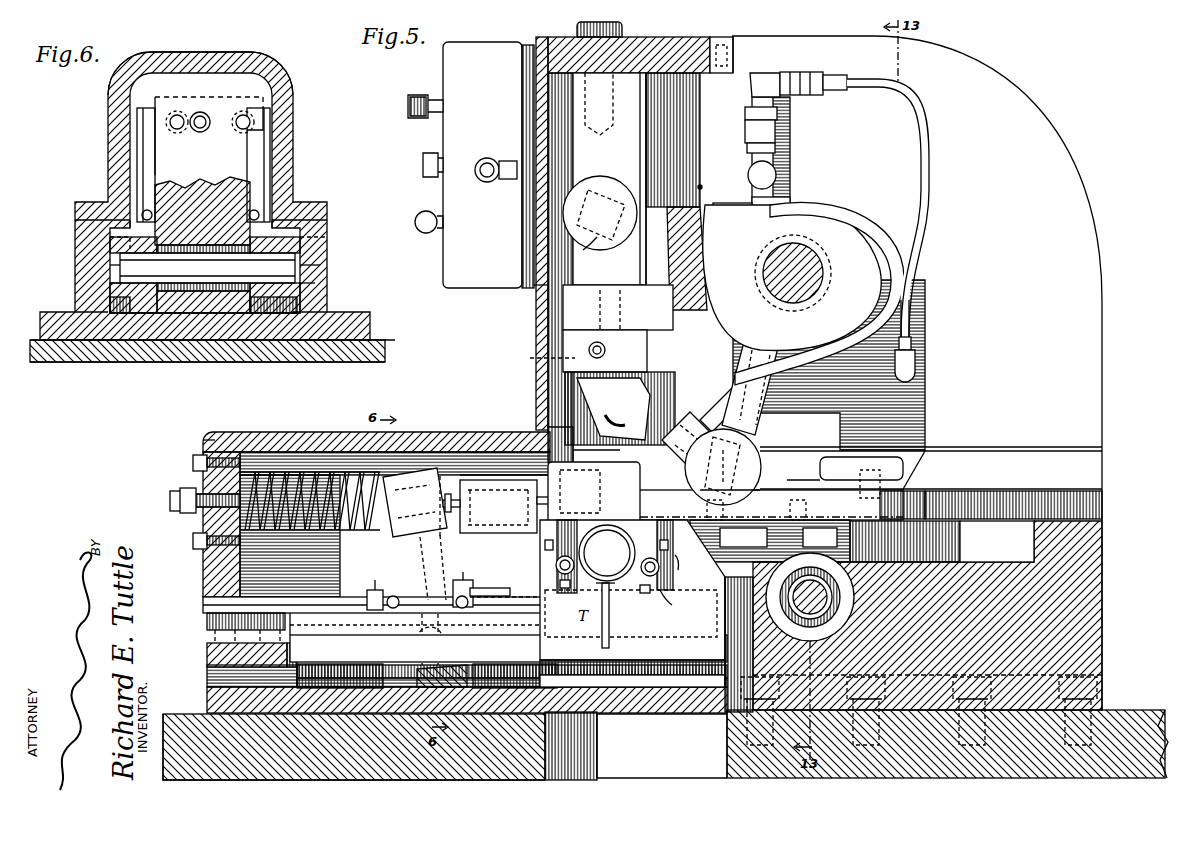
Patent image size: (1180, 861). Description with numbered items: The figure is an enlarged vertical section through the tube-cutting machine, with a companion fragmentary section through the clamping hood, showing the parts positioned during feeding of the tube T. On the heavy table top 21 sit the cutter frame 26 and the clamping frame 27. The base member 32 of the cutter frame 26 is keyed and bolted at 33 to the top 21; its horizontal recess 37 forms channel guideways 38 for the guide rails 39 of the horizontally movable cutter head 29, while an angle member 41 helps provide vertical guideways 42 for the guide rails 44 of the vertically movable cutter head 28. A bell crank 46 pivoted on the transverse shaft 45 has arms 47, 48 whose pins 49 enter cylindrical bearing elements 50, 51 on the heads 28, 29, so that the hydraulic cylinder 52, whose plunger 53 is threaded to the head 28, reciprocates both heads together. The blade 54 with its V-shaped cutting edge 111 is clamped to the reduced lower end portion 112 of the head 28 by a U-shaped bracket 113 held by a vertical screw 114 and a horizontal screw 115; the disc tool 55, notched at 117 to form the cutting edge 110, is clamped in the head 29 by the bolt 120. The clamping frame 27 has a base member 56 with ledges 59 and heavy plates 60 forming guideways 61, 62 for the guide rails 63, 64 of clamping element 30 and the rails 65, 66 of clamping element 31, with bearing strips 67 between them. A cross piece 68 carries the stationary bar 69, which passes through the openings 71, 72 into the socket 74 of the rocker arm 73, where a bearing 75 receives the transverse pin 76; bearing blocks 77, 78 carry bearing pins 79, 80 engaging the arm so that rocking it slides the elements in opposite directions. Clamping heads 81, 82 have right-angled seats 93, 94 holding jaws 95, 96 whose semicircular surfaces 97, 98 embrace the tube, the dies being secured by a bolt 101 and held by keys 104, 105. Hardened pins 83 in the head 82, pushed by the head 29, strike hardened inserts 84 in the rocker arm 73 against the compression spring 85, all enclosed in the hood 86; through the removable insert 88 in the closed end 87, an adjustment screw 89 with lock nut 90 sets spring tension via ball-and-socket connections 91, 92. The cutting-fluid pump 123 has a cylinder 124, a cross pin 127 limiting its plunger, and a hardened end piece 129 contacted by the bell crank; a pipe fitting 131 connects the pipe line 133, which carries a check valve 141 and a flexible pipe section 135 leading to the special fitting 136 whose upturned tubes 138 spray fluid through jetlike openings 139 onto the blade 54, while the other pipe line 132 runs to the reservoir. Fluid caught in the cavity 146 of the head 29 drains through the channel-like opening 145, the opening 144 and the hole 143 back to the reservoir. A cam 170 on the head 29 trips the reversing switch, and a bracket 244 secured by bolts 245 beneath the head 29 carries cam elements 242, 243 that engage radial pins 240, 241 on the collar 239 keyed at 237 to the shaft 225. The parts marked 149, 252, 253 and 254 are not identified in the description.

In FIG. 6, the table top 21 is at (372, 338).
In FIG. 5, the table top 21 is at (196, 722).
In FIG. 5, the cutter frame 26 is at (1100, 588).
In FIG. 6, the clamping frame 27 is at (76, 258).
In FIG. 5, the clamping frame 27 is at (198, 694).
In FIG. 5, the vertically movable tube cutter head 28 is at (547, 296).
In FIG. 5, the horizontally movable tube cutter head 29 is at (540, 435).
In FIG. 6, the tube-clamping element 30 is at (150, 318).
In FIG. 5, the tube-clamping element 30 is at (618, 672).
In FIG. 6, the tube-clamping element 31 is at (128, 215).
In FIG. 5, the tube-clamping element 31 is at (594, 675).
In FIG. 5, the base member 32 is at (1075, 632).
In FIG. 5, the bolt 33 is at (815, 700).
In FIG. 5, the horizontal recess 37 is at (985, 492).
In FIG. 5, the channel guideways 38 is at (1055, 492).
In FIG. 5, the guide rails 39 is at (673, 38).
In FIG. 5, the angle member 41 is at (556, 122).
In FIG. 5, the vertical guideways 42 is at (698, 335).
In FIG. 5, the guide rails 44 is at (684, 285).
In FIG. 5, the transverse shaft 45 is at (812, 262).
In FIG. 5, the bell crank 46 is at (812, 222).
In FIG. 5, the arm 47 is at (700, 205).
In FIG. 5, the arm 48 is at (905, 382).
In FIG. 5, the pins 49 is at (612, 178).
In FIG. 5, the cylindrical bearing element 50 is at (586, 250).
In FIG. 5, the cylindrical bearing element 51 is at (748, 378).
In FIG. 5, the hydraulic cylinder 52 is at (548, 38).
In FIG. 5, the plunger 53 is at (610, 22).
In FIG. 5, the cutting tool 54 is at (537, 380).
In FIG. 5, the cutting tool 55 is at (508, 434).
In FIG. 5, the base member 56 is at (205, 676).
In FIG. 6, the ledge 59 is at (112, 320).
In FIG. 5, the ledge 59 is at (300, 690).
In FIG. 6, the heavy plate 60 is at (80, 226).
In FIG. 5, the heavy plate 60 is at (340, 600).
In FIG. 6, the channel guideway 61 is at (108, 300).
In FIG. 6, the channel guideway 62 is at (305, 268).
In FIG. 6, the guide rail 63 is at (115, 281).
In FIG. 5, the guide rail 63 is at (688, 672).
In FIG. 6, the guide rail 64 is at (305, 282).
In FIG. 6, the guide rail 65 is at (110, 245).
In FIG. 5, the guide rail 65 is at (518, 594).
In FIG. 6, the guide rail 66 is at (305, 243).
In FIG. 6, the bearing strips 67 is at (115, 268).
In FIG. 5, the bearing strips 67 is at (500, 637).
In FIG. 5, the cross piece 68 is at (208, 656).
In FIG. 5, the bar 69 is at (208, 640).
In FIG. 6, the rectangular opening 71 is at (236, 290).
In FIG. 5, the rectangular opening 71 is at (478, 650).
In FIG. 6, the rectangular opening 72 is at (218, 300).
In FIG. 5, the rectangular opening 72 is at (492, 582).
In FIG. 6, the rocker arm 73 is at (240, 160).
In FIG. 5, the rocker arm 73 is at (400, 536).
In FIG. 6, the socket 74 is at (190, 295).
In FIG. 5, the socket 74 is at (392, 595).
In FIG. 6, the bearing 75 is at (205, 312).
In FIG. 5, the bearing 75 is at (458, 600).
In FIG. 6, the transverse pin 76 is at (172, 300).
In FIG. 5, the transverse pin 76 is at (438, 595).
In FIG. 6, the bearing block 77 is at (255, 313).
In FIG. 5, the bearing block 77 is at (375, 690).
In FIG. 6, the bearing block 78 is at (283, 182).
In FIG. 5, the bearing block 78 is at (464, 580).
In FIG. 5, the bearing pin 79 is at (432, 690).
In FIG. 5, the bearing pin 80 is at (458, 572).
In FIG. 5, the clamping head 81 is at (720, 491).
In FIG. 6, the clamping head 82 is at (140, 130).
In FIG. 5, the clamping head 82 is at (470, 478).
In FIG. 5, the hardened pins 83 is at (462, 478).
In FIG. 6, the hardened inserts 84 is at (177, 112).
In FIG. 5, the hardened inserts 84 is at (446, 492).
In FIG. 5, the compression spiral spring 85 is at (312, 470).
In FIG. 6, the hood 86 is at (280, 90).
In FIG. 5, the hood 86 is at (345, 434).
In FIG. 5, the closed end 87 is at (193, 542).
In FIG. 5, the removable insert 88 is at (193, 462).
In FIG. 5, the adjustment screw 89 is at (172, 495).
In FIG. 5, the lock nut 90 is at (186, 488).
In FIG. 6, the ball-and-socket connection 91 is at (202, 110).
In FIG. 5, the ball-and-socket connection 91 is at (376, 428).
In FIG. 5, the ball-and-socket connection 92 is at (256, 436).
In FIG. 5, the right-angled seat 93 is at (680, 570).
In FIG. 5, the right-angled seat 94 is at (640, 570).
In FIG. 5, the jaw 95 is at (664, 598).
In FIG. 5, the jaw 96 is at (560, 580).
In FIG. 5, the semicircular surface 97 is at (607, 553).
In FIG. 5, the semicircular surface 98 is at (556, 562).
In FIG. 5, the bolt 101 is at (650, 590).
In FIG. 5, the key 104 is at (646, 595).
In FIG. 5, the key 105 is at (668, 548).
In FIG. 5, the cutting edge 110 is at (546, 540).
In FIG. 5, the V-shaped cutting edge 111 is at (565, 405).
In FIG. 5, the reduced lower end portion 112 is at (530, 358).
In FIG. 5, the U-shaped bracket 113 is at (563, 345).
In FIG. 5, the vertical screw 114 is at (612, 312).
In FIG. 5, the horizontal screw 115 is at (596, 333).
In FIG. 5, the notch 117 is at (607, 553).
In FIG. 5, the bolt 120 is at (590, 512).
In FIG. 5, the pump 123 is at (776, 132).
In FIG. 5, the cylinder 124 is at (745, 70).
In FIG. 5, the cross pin 127 is at (680, 184).
In FIG. 5, the hardened end piece 129 is at (722, 214).
In FIG. 5, the pipe fitting 131 is at (752, 75).
In FIG. 5, the pipe line 132 is at (910, 278).
In FIG. 5, the pipe line 133 is at (776, 160).
In FIG. 5, the flexible pipe section 135 is at (924, 182).
In FIG. 5, the special fitting 136 is at (717, 407).
In FIG. 5, the tubes 138 is at (625, 414).
In FIG. 5, the jetlike openings 139 is at (606, 420).
In FIG. 5, the check valve 141 is at (778, 114).
In FIG. 5, the hole 143 is at (642, 768).
In FIG. 5, the opening 144 is at (650, 708).
In FIG. 5, the channel-like opening 145 is at (714, 682).
In FIG. 5, the cavity 146 is at (556, 428).
In FIG. 5, the pin 149 is at (723, 467).
In FIG. 5, the cam 170 is at (905, 455).
In FIG. 5, the shaft 225 is at (855, 592).
In FIG. 5, the key 237 is at (800, 620).
In FIG. 5, the collar 239 is at (812, 614).
In FIG. 5, the radial pin 240 is at (770, 533).
In FIG. 5, the radial pin 241 is at (796, 510).
In FIG. 5, the cam element 242 is at (800, 520).
In FIG. 5, the cam element 243 is at (710, 510).
In FIG. 5, the bracket 244 is at (860, 505).
In FIG. 5, the bolts 245 is at (808, 470).
In FIG. 5, the knob 252 is at (496, 182).
In FIG. 5, the control box 253 is at (443, 72).
In FIG. 5, the plate 254 is at (540, 320).